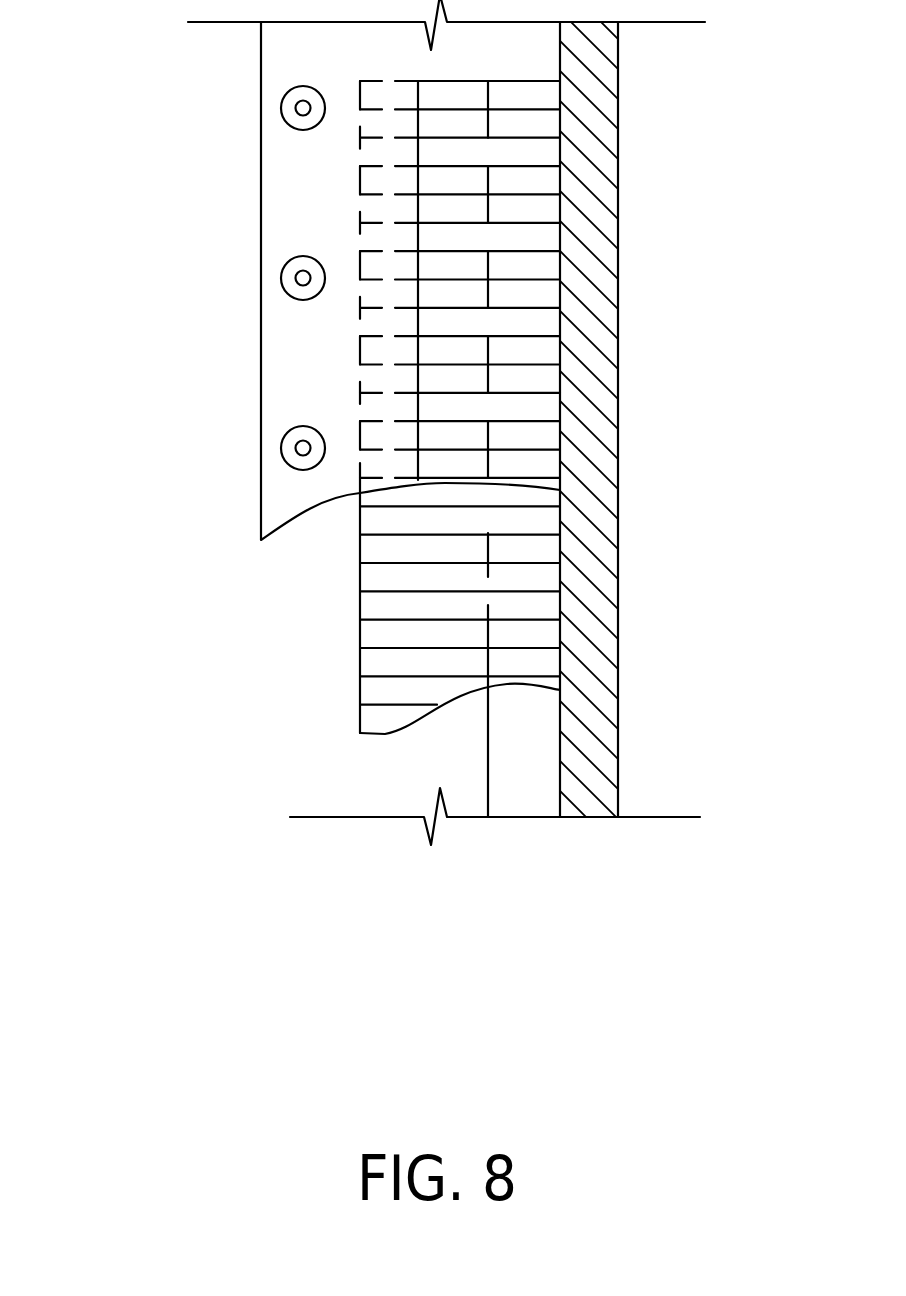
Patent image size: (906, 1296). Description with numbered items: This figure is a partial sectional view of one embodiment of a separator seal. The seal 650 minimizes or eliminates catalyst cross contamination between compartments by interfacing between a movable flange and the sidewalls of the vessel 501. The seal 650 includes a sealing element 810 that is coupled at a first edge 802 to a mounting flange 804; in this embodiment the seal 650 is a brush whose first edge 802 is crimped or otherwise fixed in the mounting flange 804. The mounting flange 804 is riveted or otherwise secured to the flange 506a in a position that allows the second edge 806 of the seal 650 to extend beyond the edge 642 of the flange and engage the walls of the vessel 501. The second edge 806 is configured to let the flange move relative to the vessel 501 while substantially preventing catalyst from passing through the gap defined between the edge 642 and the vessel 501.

The seal 650 is at (256, 203).
The mounting flange 804 is at (261, 463).
The first edge 802 is at (360, 578).
The second edge 806 is at (562, 548).
The vessel 501 is at (593, 630).
The sealing element 810 is at (410, 688).
The flange 506a is at (405, 779).
The edge 642 is at (487, 777).